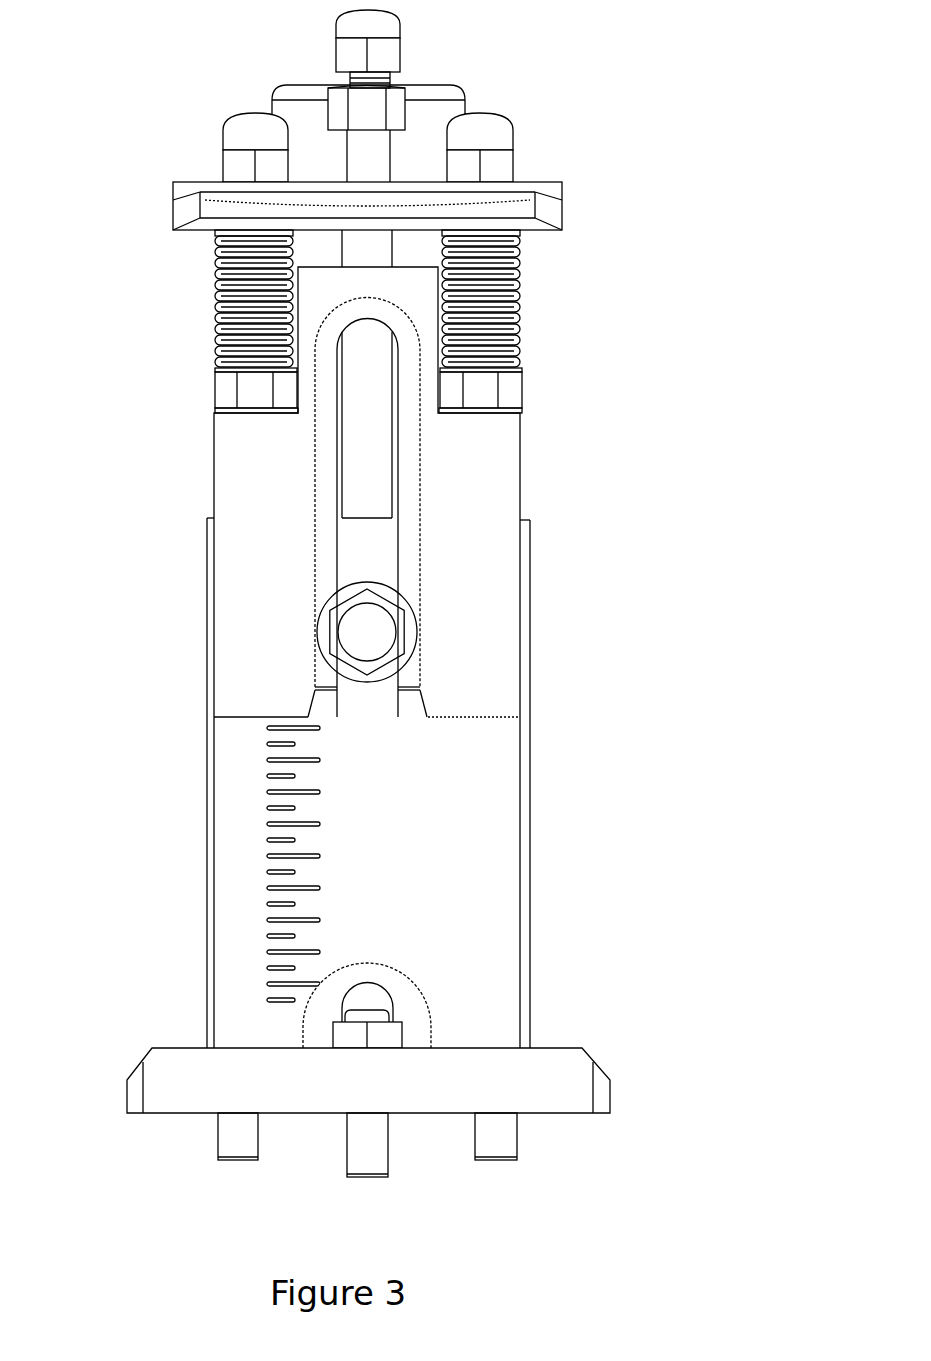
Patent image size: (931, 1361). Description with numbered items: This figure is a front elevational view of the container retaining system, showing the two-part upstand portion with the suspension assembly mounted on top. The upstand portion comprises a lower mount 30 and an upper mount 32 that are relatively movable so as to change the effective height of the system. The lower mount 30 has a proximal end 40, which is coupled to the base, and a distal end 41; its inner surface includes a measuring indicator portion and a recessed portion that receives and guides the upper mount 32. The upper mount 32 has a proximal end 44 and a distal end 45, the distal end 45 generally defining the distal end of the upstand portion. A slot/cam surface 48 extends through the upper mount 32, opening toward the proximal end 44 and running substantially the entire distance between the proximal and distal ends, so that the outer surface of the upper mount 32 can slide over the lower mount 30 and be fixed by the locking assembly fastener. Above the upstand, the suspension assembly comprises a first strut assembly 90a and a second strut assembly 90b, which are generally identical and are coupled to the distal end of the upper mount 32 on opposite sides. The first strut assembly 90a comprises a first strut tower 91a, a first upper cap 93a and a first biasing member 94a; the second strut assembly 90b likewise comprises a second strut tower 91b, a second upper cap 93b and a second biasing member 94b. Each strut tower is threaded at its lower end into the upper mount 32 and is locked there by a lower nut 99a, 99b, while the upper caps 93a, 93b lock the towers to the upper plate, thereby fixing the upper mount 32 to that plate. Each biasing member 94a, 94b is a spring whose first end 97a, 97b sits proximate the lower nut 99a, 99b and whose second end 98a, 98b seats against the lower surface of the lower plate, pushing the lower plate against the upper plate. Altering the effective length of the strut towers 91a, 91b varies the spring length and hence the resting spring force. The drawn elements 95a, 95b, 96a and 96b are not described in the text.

The lower mount 30 is at (347, 593).
The upper mount 32 is at (522, 482).
The proximal end 40 is at (525, 1038).
The distal end 41 is at (532, 540).
The proximal end 44 is at (513, 677).
The distal end 45 is at (183, 395).
The slot/cam surface 48 is at (326, 487).
The first strut assembly 90a is at (556, 329).
The second strut assembly 90b is at (160, 340).
The first strut tower 91a is at (520, 325).
The second strut tower 91b is at (217, 317).
The first upper cap 93a is at (489, 115).
The second upper cap 93b is at (226, 136).
The first biasing member 94a is at (520, 250).
The second biasing member 94b is at (218, 268).
The right lower washer 95a is at (520, 410).
The left lower washer 95b is at (217, 417).
The right upper hex nut 96a is at (514, 166).
The left upper hex nut 96b is at (232, 160).
The first end 97a is at (520, 363).
The first end 97b is at (217, 365).
The second end 98a is at (520, 237).
The second end 98b is at (218, 236).
The lower nut 99a is at (518, 390).
The lower nut 99b is at (217, 393).